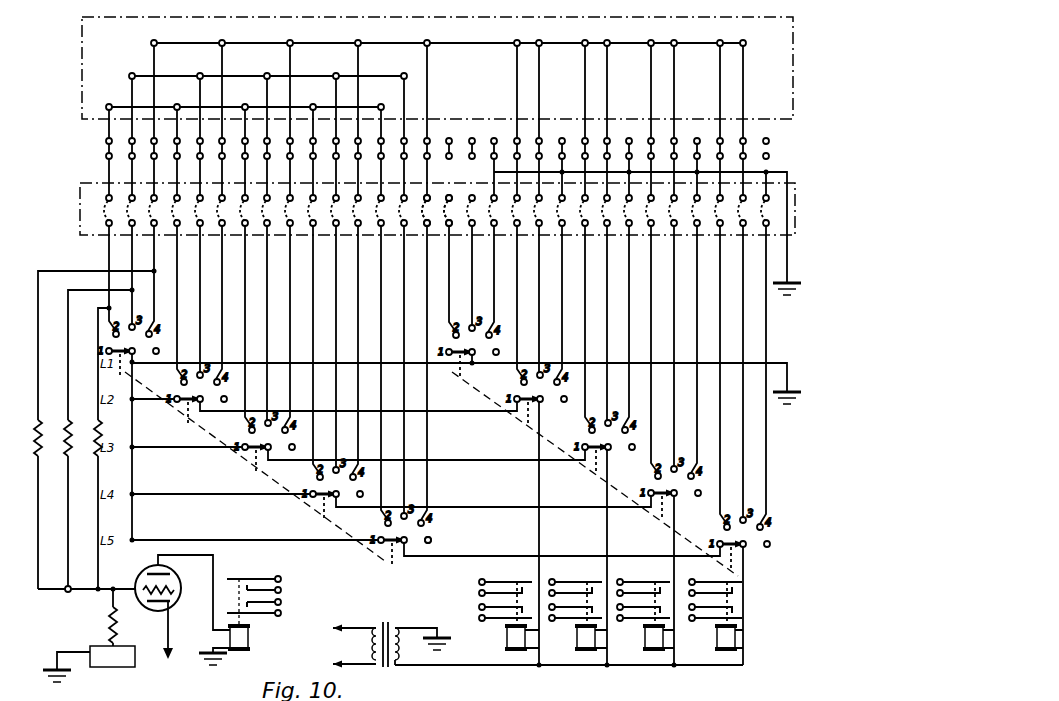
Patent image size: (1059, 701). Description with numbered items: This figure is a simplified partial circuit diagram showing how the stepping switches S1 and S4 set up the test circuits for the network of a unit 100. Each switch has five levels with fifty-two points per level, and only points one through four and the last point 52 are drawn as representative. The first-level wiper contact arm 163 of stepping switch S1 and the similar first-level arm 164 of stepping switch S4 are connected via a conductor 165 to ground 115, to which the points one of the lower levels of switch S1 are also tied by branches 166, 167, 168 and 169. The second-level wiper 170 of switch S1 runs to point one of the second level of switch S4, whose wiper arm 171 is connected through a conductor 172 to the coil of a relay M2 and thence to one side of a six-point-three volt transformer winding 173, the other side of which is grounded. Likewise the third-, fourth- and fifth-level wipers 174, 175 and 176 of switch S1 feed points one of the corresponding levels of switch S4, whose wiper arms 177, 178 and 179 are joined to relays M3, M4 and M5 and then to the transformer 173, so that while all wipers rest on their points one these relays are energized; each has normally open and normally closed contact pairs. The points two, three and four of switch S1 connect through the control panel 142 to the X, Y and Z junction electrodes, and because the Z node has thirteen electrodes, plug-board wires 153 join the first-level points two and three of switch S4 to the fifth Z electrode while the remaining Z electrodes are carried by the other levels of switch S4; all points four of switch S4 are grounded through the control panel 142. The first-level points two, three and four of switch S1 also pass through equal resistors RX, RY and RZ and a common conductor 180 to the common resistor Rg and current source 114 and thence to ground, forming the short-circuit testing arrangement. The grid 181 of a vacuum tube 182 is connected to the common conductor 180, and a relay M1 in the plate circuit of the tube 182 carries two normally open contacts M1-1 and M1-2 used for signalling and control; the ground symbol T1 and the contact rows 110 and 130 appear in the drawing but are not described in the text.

The unit 100 is at (82, 48).
The first row of contacts 110 is at (106, 141).
The second row of contacts 130 is at (106, 156).
The control panel 142 is at (80, 208).
The plug-board wires 153 is at (453, 214).
The ground 115 is at (790, 296).
The conductor 165 is at (772, 363).
The L1 wiper contact arm 163 is at (124, 347).
The L1 arm 164 is at (462, 358).
The branch 166 is at (160, 386).
The branch 167 is at (182, 449).
The branch 168 is at (180, 496).
The branch 169 is at (218, 540).
The L2 wiper 170 is at (188, 405).
The wiper arm 171 is at (519, 410).
The conductor 172 is at (560, 462).
The L3 wiper 174 is at (250, 455).
The L4 wiper 175 is at (318, 499).
The L5 wiper 176 is at (392, 549).
The wiper arm 177 is at (590, 456).
The wiper arm 178 is at (658, 501).
The wiper arm 179 is at (718, 541).
The last point 52 is at (437, 541).
The stepping switch S1 is at (370, 546).
The stepping switch S4 is at (740, 567).
The common conductor 180 is at (56, 592).
The grid 181 is at (176, 587).
The vacuum tube 182 is at (185, 593).
The current source 114 is at (120, 672).
The transformer winding 173 is at (386, 669).
The common resistor Rg is at (110, 618).
The resistor RX is at (94, 448).
The resistor RY is at (90, 439).
The resistor RZ is at (86, 429).
The tube ground T1 is at (202, 655).
The relay M1 is at (250, 645).
The normally open contact M1-1 is at (250, 580).
The normally open contact M1-2 is at (248, 616).
The relay M2 is at (490, 658).
The relay M3 is at (570, 658).
The relay M4 is at (640, 658).
The relay M5 is at (706, 658).